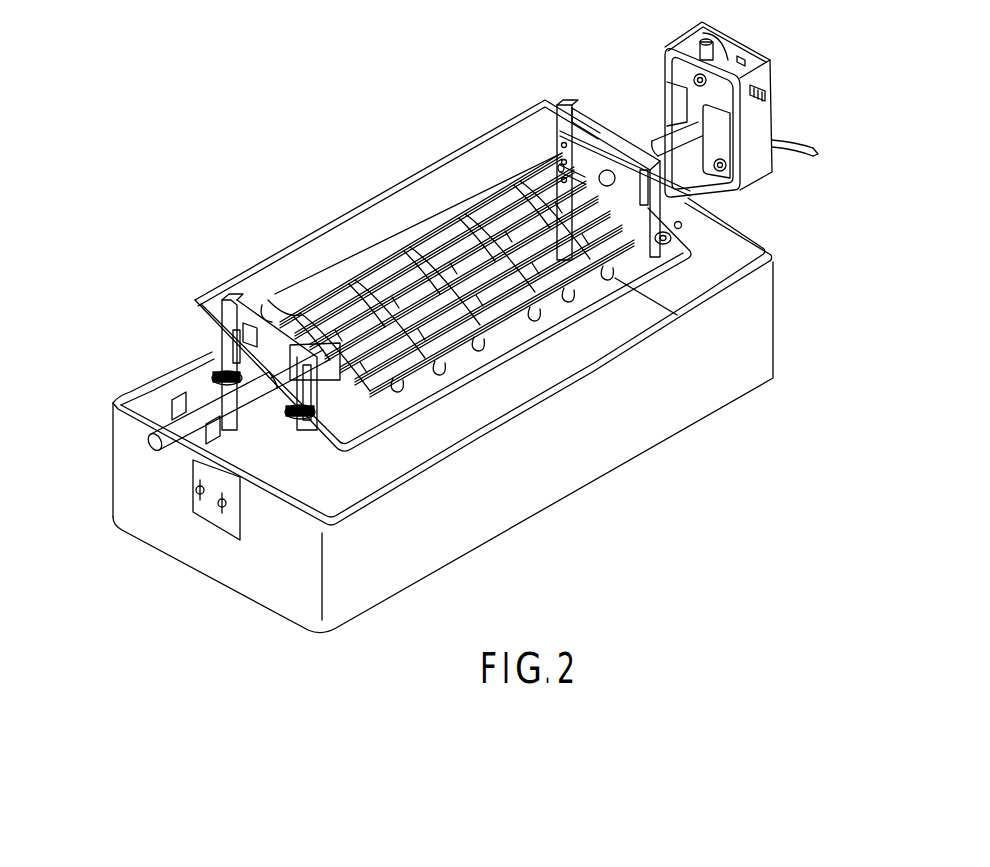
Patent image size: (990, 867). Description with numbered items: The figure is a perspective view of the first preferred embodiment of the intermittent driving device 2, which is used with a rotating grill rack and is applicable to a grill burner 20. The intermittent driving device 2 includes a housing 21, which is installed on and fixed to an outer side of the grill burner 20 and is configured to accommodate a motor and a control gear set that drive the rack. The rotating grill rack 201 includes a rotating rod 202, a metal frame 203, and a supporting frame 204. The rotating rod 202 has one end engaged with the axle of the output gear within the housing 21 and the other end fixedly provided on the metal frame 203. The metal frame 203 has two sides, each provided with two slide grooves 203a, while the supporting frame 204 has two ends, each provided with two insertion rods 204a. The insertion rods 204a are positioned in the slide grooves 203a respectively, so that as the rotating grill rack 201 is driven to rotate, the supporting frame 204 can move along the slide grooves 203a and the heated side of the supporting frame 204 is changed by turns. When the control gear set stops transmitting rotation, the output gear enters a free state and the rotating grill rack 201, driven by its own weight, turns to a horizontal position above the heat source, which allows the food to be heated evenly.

The intermittent driving device 2 is at (922, 78).
The grill burner 20 is at (746, 436).
The housing 21 is at (762, 118).
The rotating grill rack 201 is at (313, 165).
The rotating rod 202 is at (660, 150).
The metal frame 203 is at (578, 110).
The slide grooves 203a is at (233, 340).
The supporting frame 204 is at (418, 205).
The insertion rods 204a is at (200, 385).